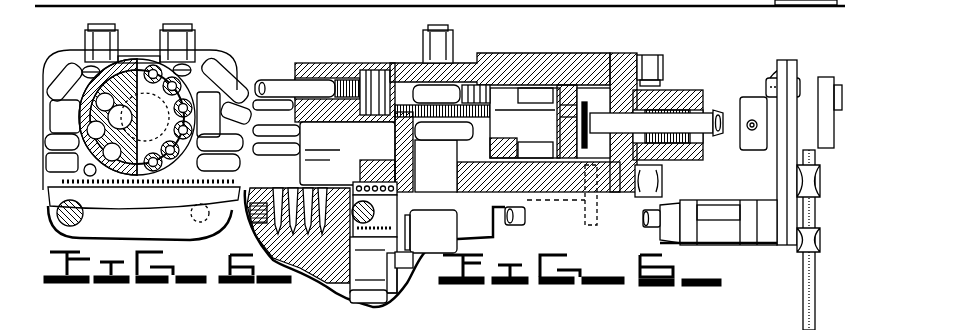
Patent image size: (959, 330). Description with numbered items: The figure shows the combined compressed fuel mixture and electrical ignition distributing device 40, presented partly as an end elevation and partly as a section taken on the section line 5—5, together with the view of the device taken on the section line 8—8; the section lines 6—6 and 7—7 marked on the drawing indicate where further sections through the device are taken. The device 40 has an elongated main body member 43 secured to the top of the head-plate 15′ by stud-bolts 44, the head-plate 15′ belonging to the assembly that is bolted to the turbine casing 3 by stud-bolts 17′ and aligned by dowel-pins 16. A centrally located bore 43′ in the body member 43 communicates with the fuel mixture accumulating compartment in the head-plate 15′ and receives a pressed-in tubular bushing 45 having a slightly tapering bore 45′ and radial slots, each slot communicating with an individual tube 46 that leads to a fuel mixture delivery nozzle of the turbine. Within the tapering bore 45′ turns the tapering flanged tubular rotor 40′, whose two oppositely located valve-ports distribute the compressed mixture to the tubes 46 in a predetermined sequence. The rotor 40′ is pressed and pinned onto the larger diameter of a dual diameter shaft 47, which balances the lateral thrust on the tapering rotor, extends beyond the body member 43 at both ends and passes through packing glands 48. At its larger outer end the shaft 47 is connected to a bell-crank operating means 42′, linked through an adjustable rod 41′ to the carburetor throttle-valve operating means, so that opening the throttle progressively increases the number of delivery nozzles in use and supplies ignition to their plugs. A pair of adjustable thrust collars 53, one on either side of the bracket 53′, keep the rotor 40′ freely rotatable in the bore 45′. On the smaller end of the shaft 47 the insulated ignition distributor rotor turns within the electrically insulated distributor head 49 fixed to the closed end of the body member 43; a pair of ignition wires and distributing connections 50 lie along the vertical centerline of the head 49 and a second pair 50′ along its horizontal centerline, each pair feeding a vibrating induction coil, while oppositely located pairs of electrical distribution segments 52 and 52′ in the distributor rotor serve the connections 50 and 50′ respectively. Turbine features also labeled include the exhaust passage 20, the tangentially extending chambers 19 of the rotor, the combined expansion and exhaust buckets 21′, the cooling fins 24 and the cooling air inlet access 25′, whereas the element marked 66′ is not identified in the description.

In FIG. 8, the turbine stator casing 3 is at (216, 222).
In FIG. 5, the turbine stator casing 3 is at (328, 288).
In FIG. 5, the section line 5— 5 is at (382, 31).
In FIG. 8, the section line 6— 6 is at (139, 38).
In FIG. 5, the section line 7— 7 is at (430, 19).
In FIG. 5, the section line 8— 8 is at (512, 33).
In FIG. 8, the head-plate 15′ is at (58, 222).
In FIG. 5, the head-plate 15′ is at (417, 300).
In FIG. 5, the dowel-pins 16 is at (536, 324).
In FIG. 8, the stud-bolts 17′ is at (120, 203).
In FIG. 5, the stud-bolts 17′ is at (517, 221).
In FIG. 5, the tangentially extending chambers 19 is at (331, 324).
In FIG. 5, the exhaust passage 20 is at (261, 203).
In FIG. 5, the combined expansion and exhaust buckets 21′ is at (322, 288).
In FIG. 5, the cooling fins 24 is at (312, 262).
In FIG. 8, the cooling air inlet access 25′ is at (142, 206).
In FIG. 5, the cooling air inlet access 25′ is at (388, 255).
In FIG. 5, the combined compressed fuel mixture and electrical ignition distributing device 40 is at (610, 53).
In FIG. 8, the tapering flanged tubular rotor 40′ is at (65, 323).
In FIG. 5, the tapering flanged tubular rotor 40′ is at (620, 53).
In FIG. 5, the adjustable rod 41′ is at (803, 291).
In FIG. 5, the bell-crank operating means 42′ is at (826, 77).
In FIG. 8, the main body member 43 is at (100, 30).
In FIG. 5, the main body member 43 is at (587, 200).
In FIG. 5, the bore 43′ is at (629, 197).
In FIG. 8, the stud-bolts 44 is at (188, 28).
In FIG. 5, the tubular bushing 45 is at (486, 62).
In FIG. 5, the tapering bore 45′ is at (664, 57).
In FIG. 8, the tube 46 is at (244, 84).
In FIG. 5, the tube 46 is at (306, 117).
In FIG. 8, the dual diameter shaft 47 is at (150, 182).
In FIG. 5, the dual diameter shaft 47 is at (713, 110).
In FIG. 5, the packing glands 48 is at (451, 138).
In FIG. 8, the distributor head 49 is at (170, 190).
In FIG. 5, the distributor head 49 is at (299, 63).
In FIG. 8, the ignition wires and distributing connections 50 is at (134, 198).
In FIG. 8, the ignition wires and distributing connections 50′ is at (228, 58).
In FIG. 5, the ignition wires and distributing connections 50′ is at (449, 126).
In FIG. 8, the electrical distribution segments 52 is at (74, 34).
In FIG. 5, the electrical distribution segments 52′ is at (364, 70).
In FIG. 5, the adjustable thrust collars 53 is at (783, 108).
In FIG. 5, the bracket 53′ is at (733, 173).
In FIG. 5, the valve chamber 66′ is at (341, 183).